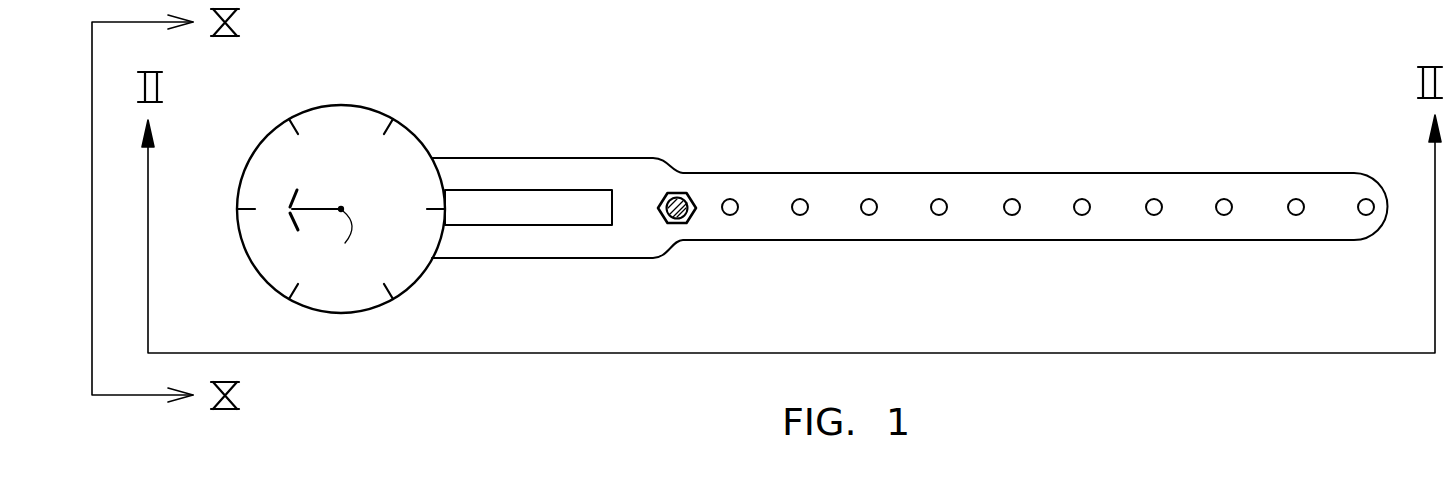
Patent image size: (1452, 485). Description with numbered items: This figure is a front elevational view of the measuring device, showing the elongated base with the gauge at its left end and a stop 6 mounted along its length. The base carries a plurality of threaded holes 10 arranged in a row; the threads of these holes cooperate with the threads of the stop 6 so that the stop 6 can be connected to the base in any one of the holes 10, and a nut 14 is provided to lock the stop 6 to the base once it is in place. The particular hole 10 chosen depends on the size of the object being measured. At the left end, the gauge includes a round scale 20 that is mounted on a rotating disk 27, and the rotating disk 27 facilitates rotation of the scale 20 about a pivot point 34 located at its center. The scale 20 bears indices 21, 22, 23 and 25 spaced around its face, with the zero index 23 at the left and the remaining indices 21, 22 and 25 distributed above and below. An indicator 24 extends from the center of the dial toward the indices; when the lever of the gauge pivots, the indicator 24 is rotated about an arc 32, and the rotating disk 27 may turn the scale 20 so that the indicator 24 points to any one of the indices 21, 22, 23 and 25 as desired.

The stop 6 is at (682, 193).
The threaded holes 10 is at (797, 201).
The nut 14 is at (682, 226).
The scale 20 is at (348, 118).
The index 21 is at (300, 112).
The index 22 is at (387, 130).
The index 23 is at (250, 210).
The indicator 24 is at (307, 208).
The index 25 is at (290, 290).
The rotating disk 27 is at (345, 117).
The arc 32 is at (290, 203).
The pivot point 34 is at (332, 232).